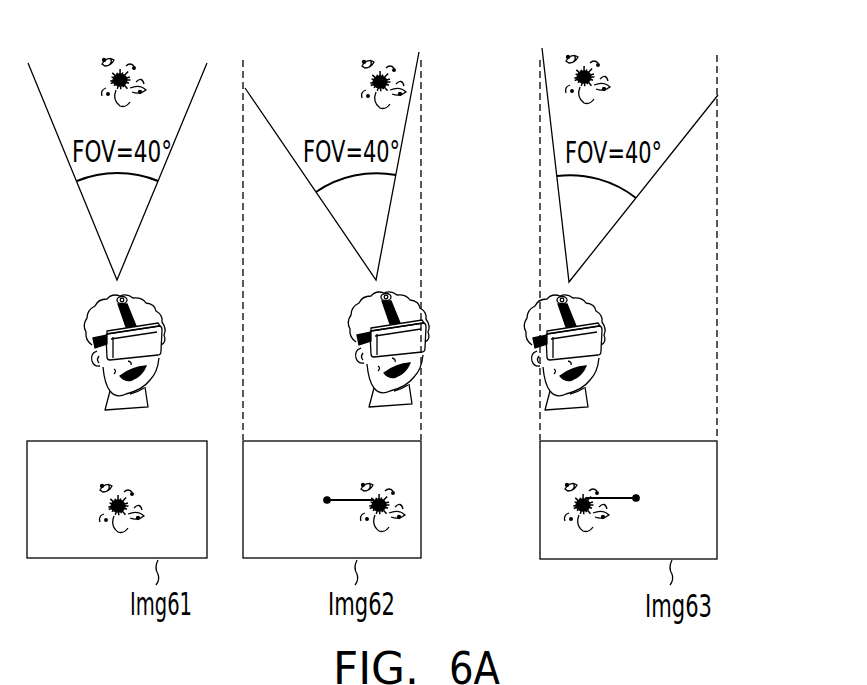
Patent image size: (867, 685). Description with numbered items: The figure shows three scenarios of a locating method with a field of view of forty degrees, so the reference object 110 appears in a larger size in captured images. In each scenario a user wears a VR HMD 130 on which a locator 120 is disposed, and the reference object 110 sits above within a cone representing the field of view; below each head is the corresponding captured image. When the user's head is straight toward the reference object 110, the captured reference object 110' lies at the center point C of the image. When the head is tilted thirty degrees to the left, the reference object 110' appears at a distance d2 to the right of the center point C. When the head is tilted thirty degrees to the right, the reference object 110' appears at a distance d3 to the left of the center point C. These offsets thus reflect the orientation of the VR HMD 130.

The reference object 110 is at (355, 54).
The locator 120 is at (125, 296).
The VR HMD 130 is at (145, 345).
The reference object in captured image 110' is at (355, 488).
The center point C is at (108, 503).
The distance d2 is at (350, 520).
The distance d3 is at (611, 482).